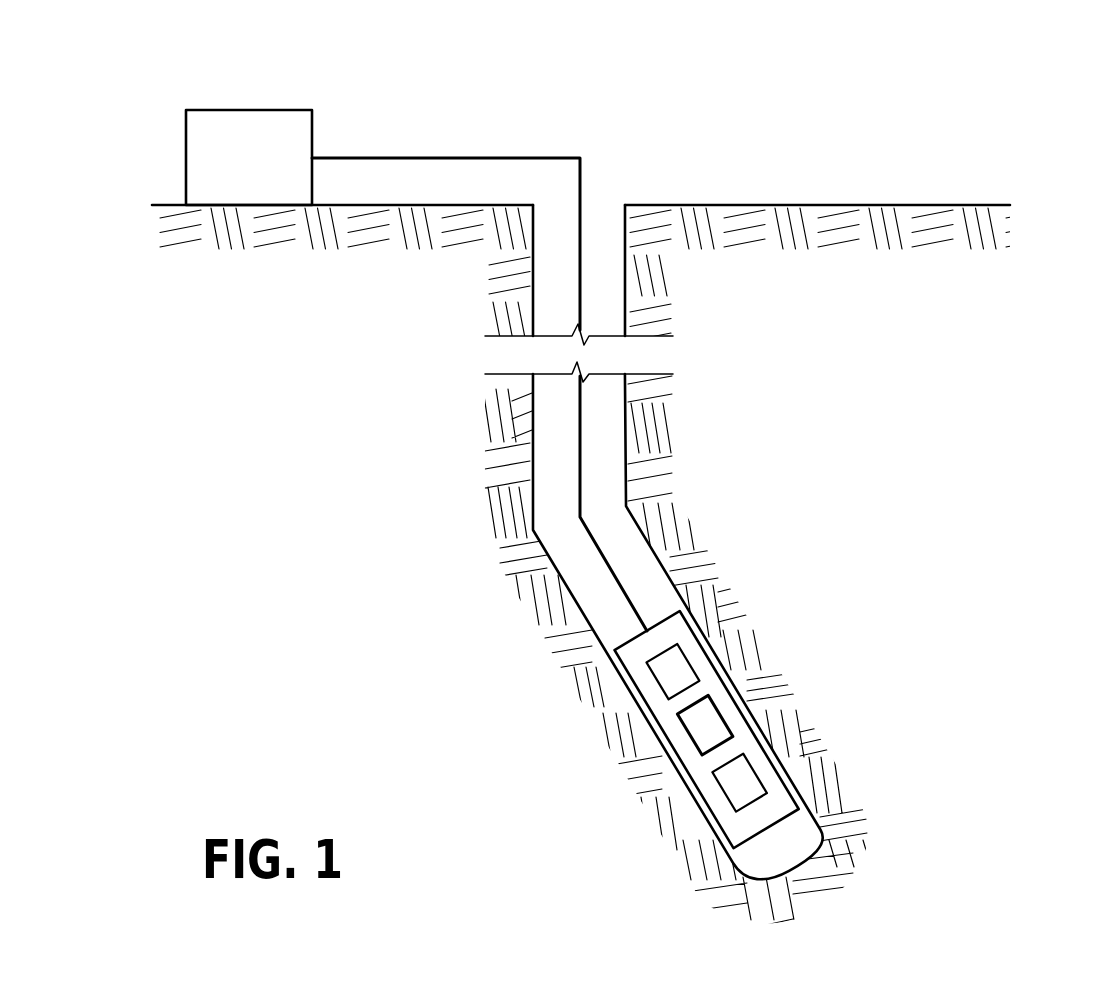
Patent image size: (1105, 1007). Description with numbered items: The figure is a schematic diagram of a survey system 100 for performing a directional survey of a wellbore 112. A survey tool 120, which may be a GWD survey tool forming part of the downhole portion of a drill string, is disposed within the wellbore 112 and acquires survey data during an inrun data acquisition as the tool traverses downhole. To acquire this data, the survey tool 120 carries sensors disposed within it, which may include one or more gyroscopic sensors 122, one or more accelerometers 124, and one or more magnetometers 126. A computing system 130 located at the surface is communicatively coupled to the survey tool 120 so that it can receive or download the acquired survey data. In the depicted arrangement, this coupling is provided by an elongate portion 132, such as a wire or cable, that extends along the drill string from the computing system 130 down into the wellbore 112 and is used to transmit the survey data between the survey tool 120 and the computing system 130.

The survey system 100 is at (940, 46).
The wellbore 112 is at (628, 276).
The survey tool 120 is at (706, 651).
The gyroscopic sensors 122 is at (714, 795).
The accelerometers 124 is at (724, 718).
The magnetometers 126 is at (647, 672).
The computing system 130 is at (273, 108).
The elongate portion 132 is at (513, 157).